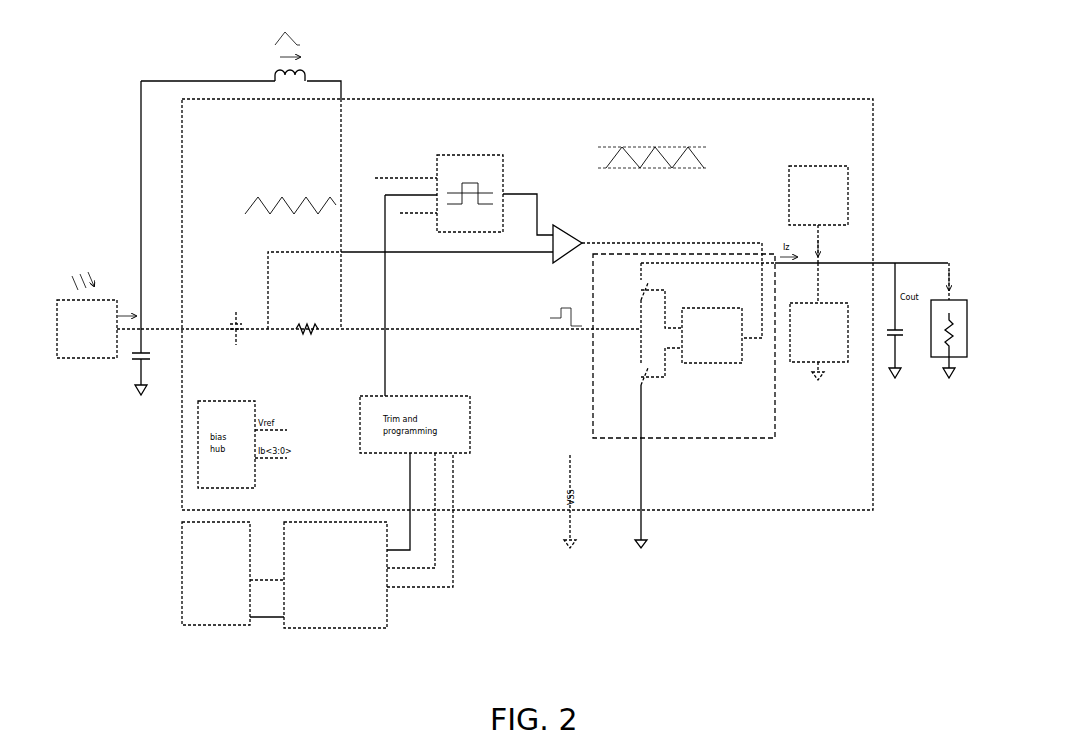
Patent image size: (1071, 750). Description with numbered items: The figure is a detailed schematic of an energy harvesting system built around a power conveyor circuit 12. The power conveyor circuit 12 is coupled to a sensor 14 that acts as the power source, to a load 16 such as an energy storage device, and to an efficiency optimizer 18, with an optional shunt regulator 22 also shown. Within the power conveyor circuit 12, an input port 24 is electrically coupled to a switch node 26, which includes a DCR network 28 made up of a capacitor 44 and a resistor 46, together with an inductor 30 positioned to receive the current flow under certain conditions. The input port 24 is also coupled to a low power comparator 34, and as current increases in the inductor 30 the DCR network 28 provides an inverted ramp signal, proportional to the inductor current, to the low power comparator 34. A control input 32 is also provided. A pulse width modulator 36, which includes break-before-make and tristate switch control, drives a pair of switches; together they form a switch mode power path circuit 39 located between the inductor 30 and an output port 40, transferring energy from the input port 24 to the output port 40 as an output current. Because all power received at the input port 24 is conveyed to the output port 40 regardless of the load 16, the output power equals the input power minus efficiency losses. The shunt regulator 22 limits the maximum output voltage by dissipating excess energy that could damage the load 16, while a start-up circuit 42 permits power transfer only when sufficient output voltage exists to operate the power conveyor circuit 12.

The power conveyor circuit 12 is at (527, 280).
The sensor 14 is at (99, 309).
The load 16 is at (930, 348).
The efficiency optimizer 18 is at (317, 540).
The shunt regulator 22 is at (819, 321).
The input port 24 is at (386, 343).
The switch node 26 is at (346, 96).
The DCR network 28 is at (263, 298).
The inductor 30 is at (309, 68).
The control input 32 is at (430, 190).
The low power comparator 34 is at (560, 222).
The pulse width modulator 36 is at (712, 335).
The switch mode power path circuit 39 is at (714, 442).
The output port 40 is at (876, 258).
The start-up circuit 42 is at (818, 214).
The capacitor 44 is at (238, 342).
The resistor 46 is at (314, 343).